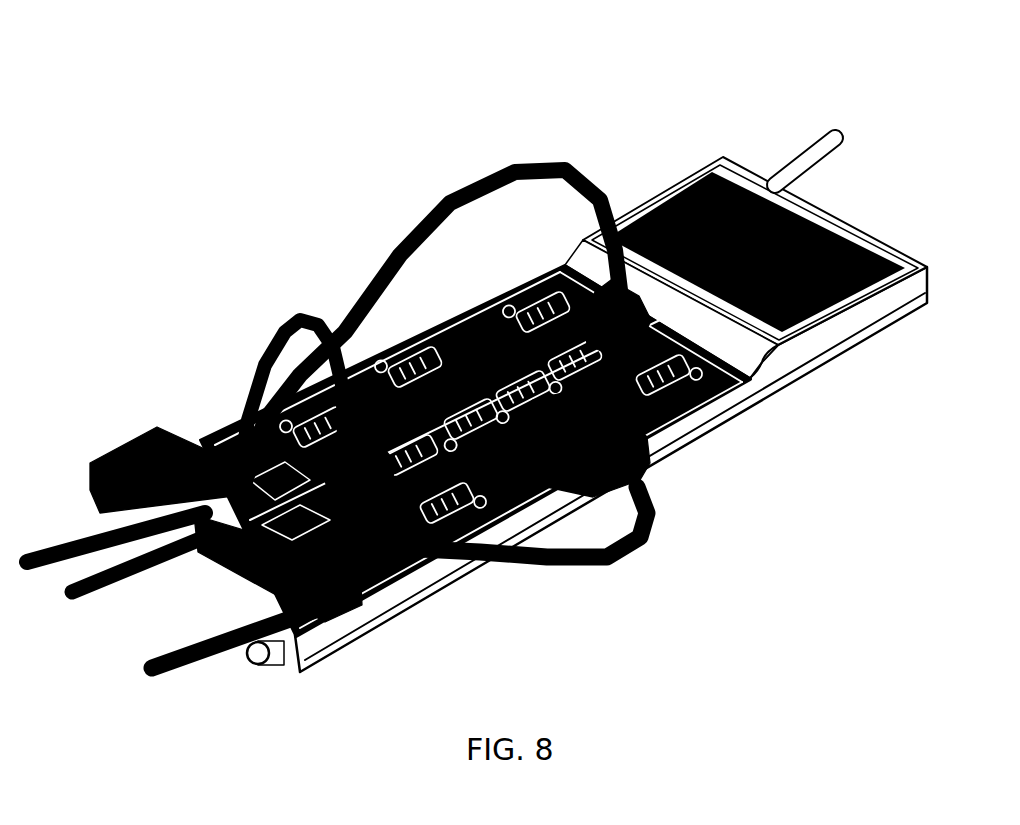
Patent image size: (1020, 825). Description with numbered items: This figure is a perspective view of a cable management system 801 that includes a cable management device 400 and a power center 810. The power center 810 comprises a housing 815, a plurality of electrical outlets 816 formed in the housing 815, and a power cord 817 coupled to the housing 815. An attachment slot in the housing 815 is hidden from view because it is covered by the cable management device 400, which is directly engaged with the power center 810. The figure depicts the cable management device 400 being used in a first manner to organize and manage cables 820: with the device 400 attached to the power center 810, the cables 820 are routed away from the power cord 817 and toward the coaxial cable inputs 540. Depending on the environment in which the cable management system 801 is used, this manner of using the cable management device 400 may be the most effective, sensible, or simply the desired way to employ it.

The cable management system 801 is at (477, 376).
The power center 810 is at (823, 353).
The housing 815 is at (657, 417).
The electrical outlets 816 is at (475, 391).
The power cord 817 is at (813, 137).
The cable management device 400 is at (128, 445).
The cables 820 is at (32, 572).
The coaxial cable inputs 540 is at (272, 662).